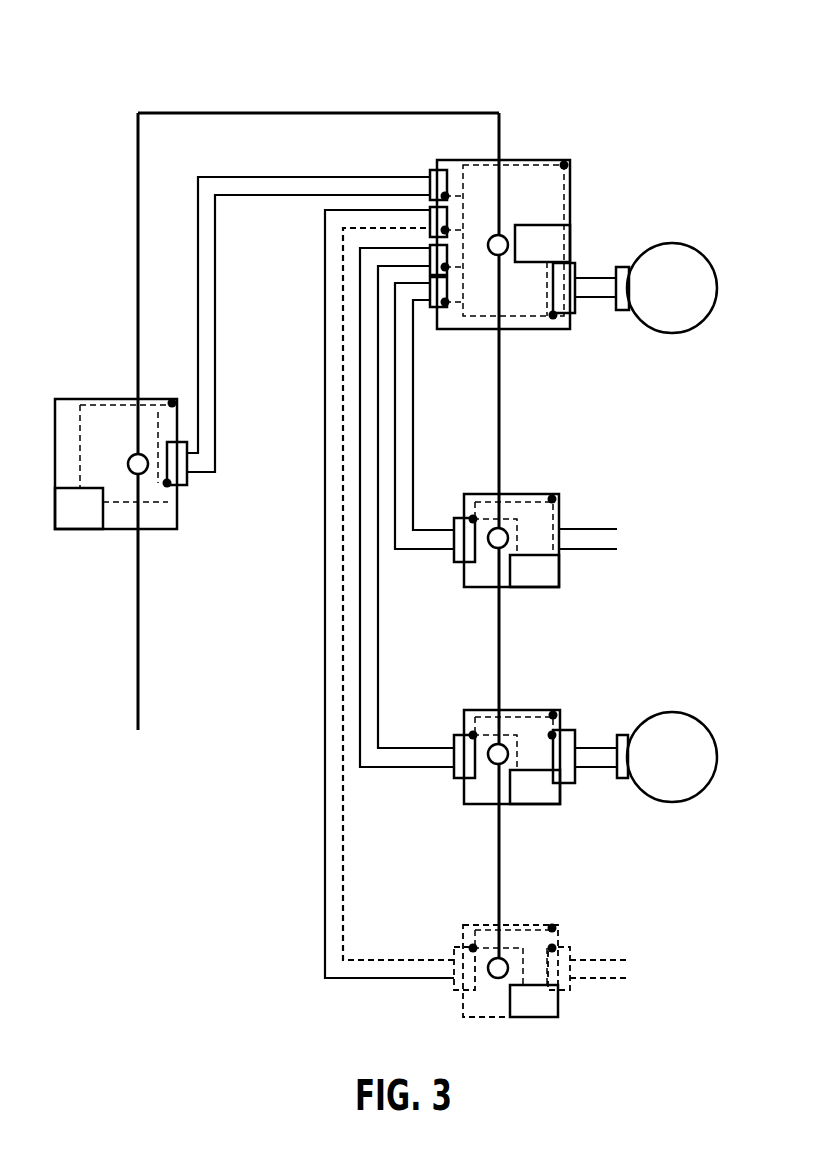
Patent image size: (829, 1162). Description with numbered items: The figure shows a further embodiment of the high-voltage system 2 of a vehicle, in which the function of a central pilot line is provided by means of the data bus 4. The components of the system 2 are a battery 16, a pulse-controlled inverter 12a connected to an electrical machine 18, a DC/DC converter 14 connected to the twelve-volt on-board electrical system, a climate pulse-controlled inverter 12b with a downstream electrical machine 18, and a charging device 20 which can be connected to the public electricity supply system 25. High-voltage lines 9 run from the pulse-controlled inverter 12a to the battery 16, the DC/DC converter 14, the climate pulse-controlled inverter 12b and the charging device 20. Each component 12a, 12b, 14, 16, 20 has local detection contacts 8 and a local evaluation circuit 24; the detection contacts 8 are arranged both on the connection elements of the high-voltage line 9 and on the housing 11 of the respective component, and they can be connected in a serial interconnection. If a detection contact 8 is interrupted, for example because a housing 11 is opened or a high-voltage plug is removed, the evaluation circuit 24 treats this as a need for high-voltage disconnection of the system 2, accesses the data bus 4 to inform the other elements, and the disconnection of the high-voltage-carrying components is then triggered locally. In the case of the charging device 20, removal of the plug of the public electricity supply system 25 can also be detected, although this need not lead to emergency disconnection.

The system 2 is at (112, 92).
The data bus 4 is at (138, 668).
The detection contacts 8 is at (441, 229).
The high-voltage lines 9 is at (262, 182).
The housing 11 is at (572, 188).
The pulse-controlled inverter 12a is at (527, 300).
The climate pulse-controlled inverter 12b is at (525, 722).
The DC/DC converter 14 is at (535, 517).
The battery 16 is at (114, 400).
The electrical machine 18 is at (678, 250).
The charging device 20 is at (527, 942).
The evaluation circuit 24 is at (562, 240).
The public electricity supply system 25 is at (672, 983).